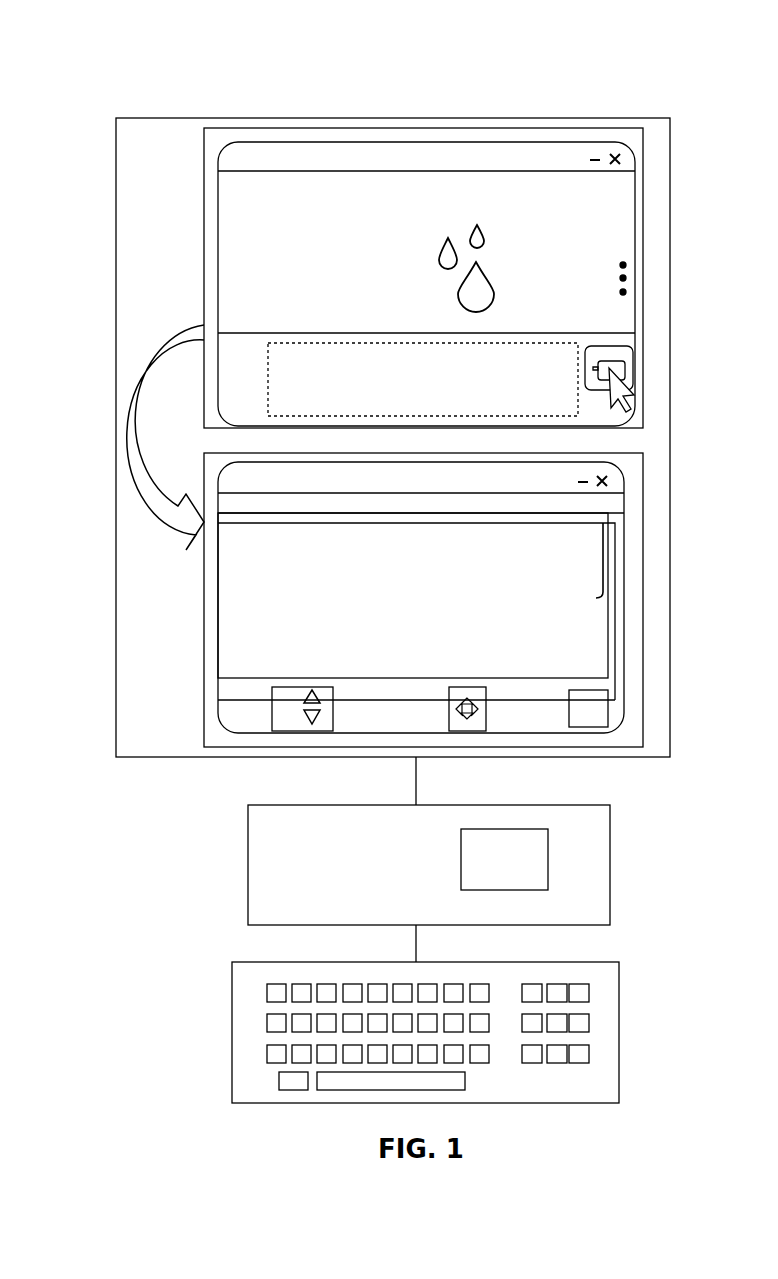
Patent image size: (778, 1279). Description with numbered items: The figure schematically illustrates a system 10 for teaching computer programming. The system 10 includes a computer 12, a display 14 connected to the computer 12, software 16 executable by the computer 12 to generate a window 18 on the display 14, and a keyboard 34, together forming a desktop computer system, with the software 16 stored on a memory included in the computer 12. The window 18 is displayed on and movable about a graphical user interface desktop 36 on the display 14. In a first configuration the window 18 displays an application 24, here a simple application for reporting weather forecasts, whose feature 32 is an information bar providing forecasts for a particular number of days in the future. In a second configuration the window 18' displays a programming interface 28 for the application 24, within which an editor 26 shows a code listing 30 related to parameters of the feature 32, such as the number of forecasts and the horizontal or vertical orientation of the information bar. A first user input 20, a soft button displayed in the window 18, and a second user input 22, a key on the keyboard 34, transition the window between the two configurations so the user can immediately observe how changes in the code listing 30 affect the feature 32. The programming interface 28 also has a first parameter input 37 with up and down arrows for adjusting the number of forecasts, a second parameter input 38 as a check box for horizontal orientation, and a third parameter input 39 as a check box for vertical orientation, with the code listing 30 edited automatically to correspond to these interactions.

The system 10 is at (108, 80).
The computer 12 is at (288, 873).
The display 14 is at (367, 118).
The software 16 is at (516, 871).
The window 18 is at (433, 284).
The window 18' is at (446, 626).
The first user input 20 is at (618, 381).
The second user input 22 is at (279, 1085).
The application 24 is at (237, 246).
The editor 26 is at (610, 641).
The programming interface 28 is at (244, 671).
The code listing 30 is at (604, 560).
The feature 32 is at (538, 343).
The keyboard 34 is at (603, 1013).
The graphical user interface desktop 36 is at (140, 724).
The first parameter input 37 is at (296, 733).
The second parameter input 38 is at (470, 733).
The third parameter input 39 is at (600, 714).